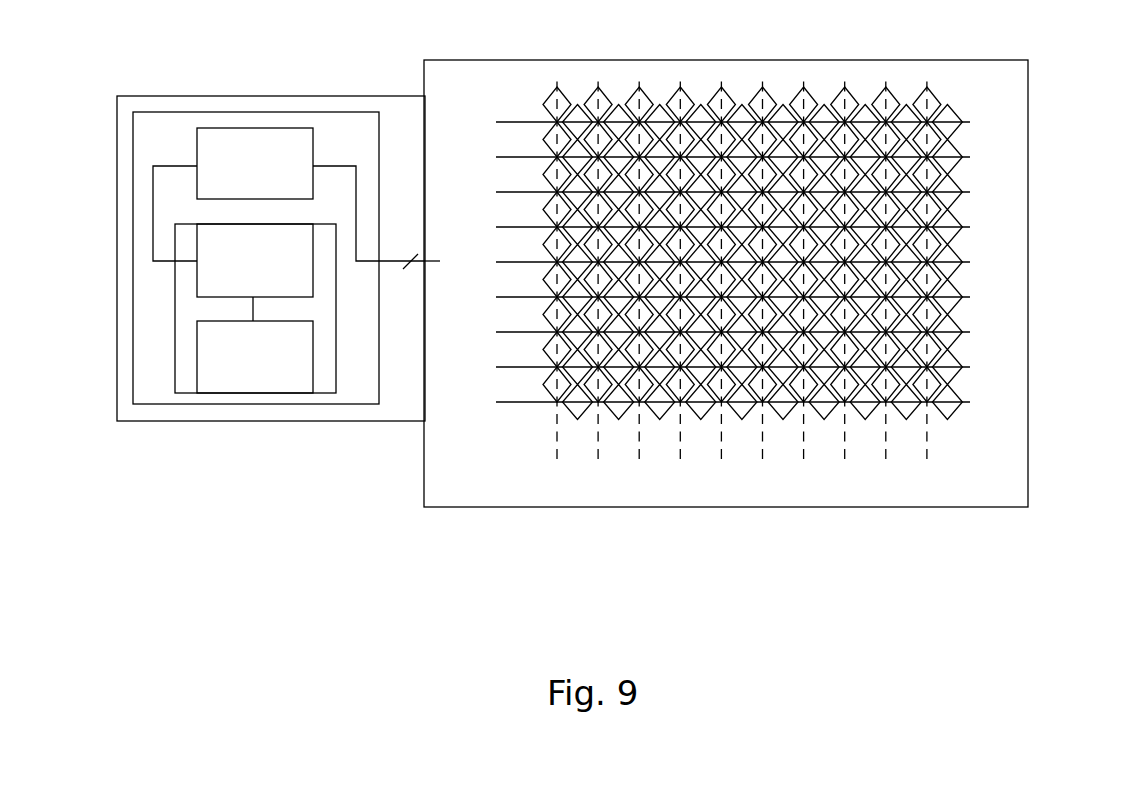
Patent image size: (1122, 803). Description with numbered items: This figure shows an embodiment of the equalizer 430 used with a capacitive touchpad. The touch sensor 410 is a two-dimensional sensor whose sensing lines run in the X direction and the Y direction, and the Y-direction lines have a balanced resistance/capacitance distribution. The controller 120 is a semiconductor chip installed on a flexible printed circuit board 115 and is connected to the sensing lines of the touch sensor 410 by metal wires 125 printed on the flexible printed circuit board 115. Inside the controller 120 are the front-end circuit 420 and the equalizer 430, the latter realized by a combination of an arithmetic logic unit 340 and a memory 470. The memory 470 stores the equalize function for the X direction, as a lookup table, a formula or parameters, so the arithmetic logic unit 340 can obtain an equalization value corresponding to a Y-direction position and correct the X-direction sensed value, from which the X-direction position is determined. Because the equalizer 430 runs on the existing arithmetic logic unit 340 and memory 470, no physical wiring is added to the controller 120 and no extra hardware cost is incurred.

The flexible printed circuit board 115 is at (271, 97).
The controller 120 is at (252, 404).
The metal wires 125 is at (393, 261).
The front-end circuit 420 is at (244, 128).
The equalizer 430 is at (173, 303).
The arithmetic logic unit 340 is at (313, 262).
The memory 470 is at (193, 353).
The touch sensor 410 is at (1028, 283).